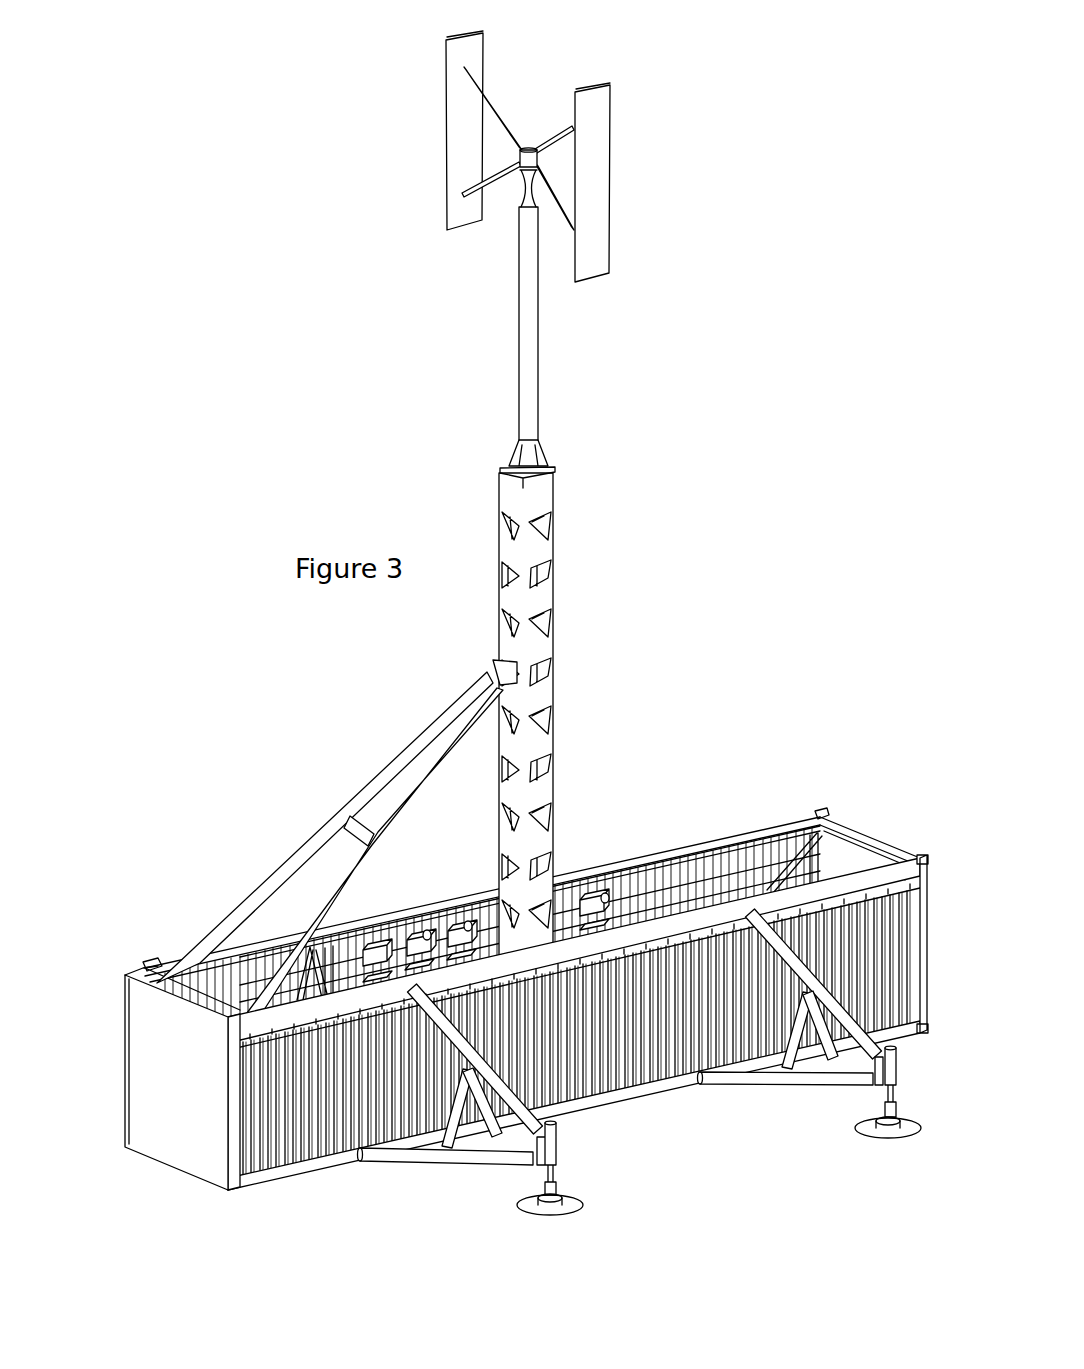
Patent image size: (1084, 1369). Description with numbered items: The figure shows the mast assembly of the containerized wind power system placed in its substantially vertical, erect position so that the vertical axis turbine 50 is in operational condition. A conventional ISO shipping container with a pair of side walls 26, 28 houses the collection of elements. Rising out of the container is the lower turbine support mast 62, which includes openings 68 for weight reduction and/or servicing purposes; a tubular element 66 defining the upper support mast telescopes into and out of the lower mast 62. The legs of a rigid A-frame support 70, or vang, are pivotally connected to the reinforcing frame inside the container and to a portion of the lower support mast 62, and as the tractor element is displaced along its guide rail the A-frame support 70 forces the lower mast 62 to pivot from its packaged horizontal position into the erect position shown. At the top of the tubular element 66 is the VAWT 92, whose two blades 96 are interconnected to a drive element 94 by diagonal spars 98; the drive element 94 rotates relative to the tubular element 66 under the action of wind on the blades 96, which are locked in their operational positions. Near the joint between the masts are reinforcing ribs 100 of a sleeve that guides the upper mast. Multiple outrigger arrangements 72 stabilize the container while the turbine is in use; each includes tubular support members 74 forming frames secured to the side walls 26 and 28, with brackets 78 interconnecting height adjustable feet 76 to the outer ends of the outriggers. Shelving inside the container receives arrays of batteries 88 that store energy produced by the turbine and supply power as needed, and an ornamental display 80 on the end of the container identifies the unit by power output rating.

The side wall 26 is at (742, 867).
The side wall 28 is at (300, 1127).
The vertical axis turbine 50 is at (458, 436).
The lower turbine support mast 62 is at (555, 593).
The tubular element 66 is at (537, 368).
The openings 68 is at (548, 703).
The A-frame support 70 is at (387, 762).
The outrigger arrangements 72 is at (593, 1162).
The support members 74 is at (480, 1147).
The height adjustable feet 76 is at (585, 1202).
The brackets 78 is at (527, 1147).
The ornamental display 80 is at (137, 1098).
The batteries 88 is at (457, 922).
The VAWT 92 is at (627, 210).
The drive element 94 is at (530, 143).
The blades 96 is at (608, 117).
The diagonal spars 98 is at (500, 110).
The reinforcing ribs 100 is at (537, 457).